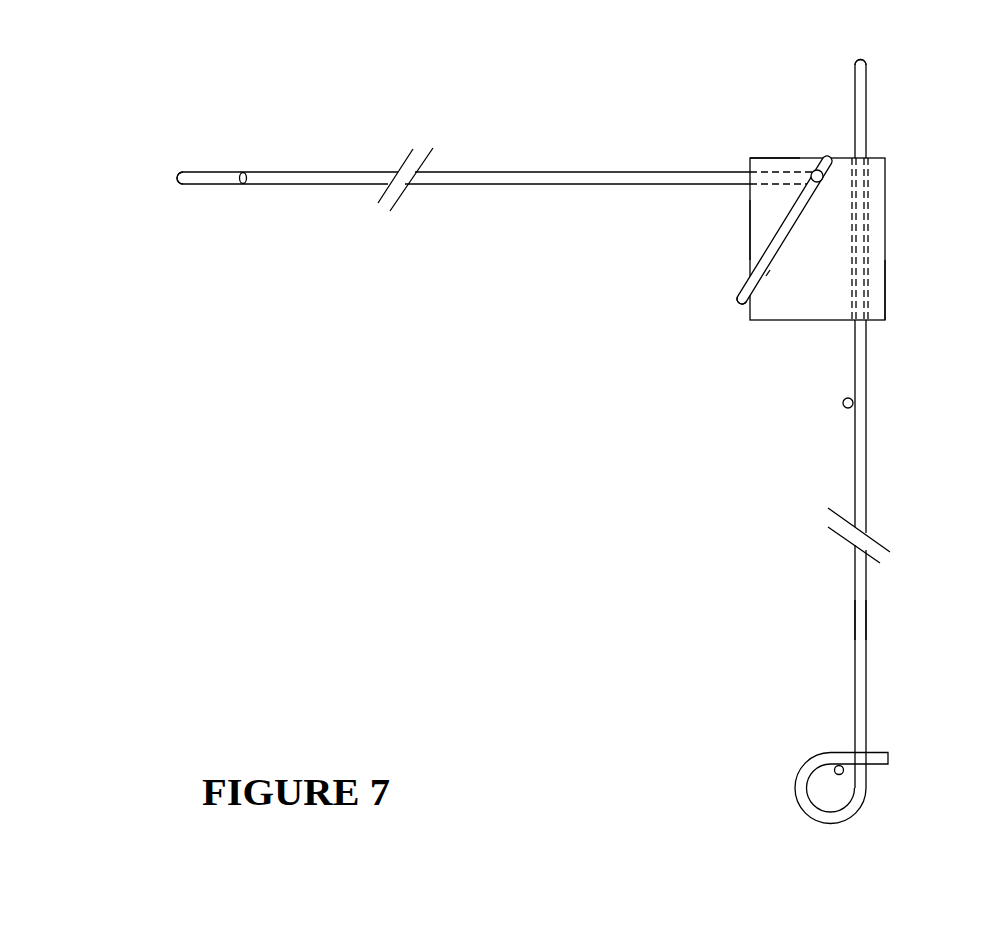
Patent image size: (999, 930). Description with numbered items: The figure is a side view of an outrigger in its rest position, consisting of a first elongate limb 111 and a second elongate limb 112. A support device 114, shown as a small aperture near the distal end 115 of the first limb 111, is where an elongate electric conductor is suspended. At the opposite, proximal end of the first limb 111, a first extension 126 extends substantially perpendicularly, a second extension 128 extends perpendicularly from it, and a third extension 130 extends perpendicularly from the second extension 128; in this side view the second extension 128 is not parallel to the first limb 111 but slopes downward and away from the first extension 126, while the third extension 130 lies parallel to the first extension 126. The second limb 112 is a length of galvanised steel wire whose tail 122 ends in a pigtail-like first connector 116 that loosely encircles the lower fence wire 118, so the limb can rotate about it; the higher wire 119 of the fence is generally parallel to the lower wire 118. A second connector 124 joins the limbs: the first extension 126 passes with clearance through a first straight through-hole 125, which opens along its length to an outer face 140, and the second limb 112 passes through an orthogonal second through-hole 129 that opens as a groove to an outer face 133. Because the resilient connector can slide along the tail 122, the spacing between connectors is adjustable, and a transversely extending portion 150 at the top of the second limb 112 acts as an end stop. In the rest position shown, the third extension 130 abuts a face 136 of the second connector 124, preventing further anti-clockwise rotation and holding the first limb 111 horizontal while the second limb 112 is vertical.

The first elongate limb 111 is at (480, 172).
The second elongate limb 112 is at (866, 375).
The support device 114 is at (229, 173).
The distal end 115 is at (182, 172).
The first connector 116 is at (795, 790).
The lower fence wire 118 is at (836, 773).
The higher wire 119 is at (843, 404).
The tail 122 is at (862, 620).
The second connector 124 is at (880, 247).
The first straight through-hole 125 is at (830, 157).
The first extension 126 is at (817, 170).
The second extension 128 is at (766, 276).
The second straight through-hole 129 is at (866, 173).
The third extension 130 is at (741, 303).
The outer face 133 is at (885, 291).
The face 136 is at (750, 228).
The outer face 140 is at (765, 157).
The transversely extending portion 150 is at (866, 62).